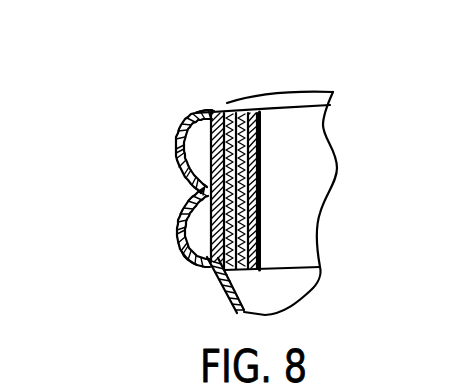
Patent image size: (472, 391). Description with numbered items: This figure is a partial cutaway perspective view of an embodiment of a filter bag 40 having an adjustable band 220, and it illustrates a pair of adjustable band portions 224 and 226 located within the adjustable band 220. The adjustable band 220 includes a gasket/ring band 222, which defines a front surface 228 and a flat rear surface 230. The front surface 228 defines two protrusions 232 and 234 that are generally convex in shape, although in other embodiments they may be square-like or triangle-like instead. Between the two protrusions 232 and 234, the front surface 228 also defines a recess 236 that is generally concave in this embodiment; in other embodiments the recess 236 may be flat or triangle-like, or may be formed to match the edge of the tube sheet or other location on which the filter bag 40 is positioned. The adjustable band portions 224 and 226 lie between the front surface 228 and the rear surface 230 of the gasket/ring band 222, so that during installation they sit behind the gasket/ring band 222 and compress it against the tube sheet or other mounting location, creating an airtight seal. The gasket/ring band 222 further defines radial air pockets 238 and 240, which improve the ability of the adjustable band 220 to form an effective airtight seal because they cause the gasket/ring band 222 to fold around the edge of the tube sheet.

The adjustable band 220 is at (142, 193).
The gasket/ring band 222 is at (155, 286).
The adjustable band portion 224 is at (227, 112).
The adjustable band portion 226 is at (259, 130).
The front surface 228 is at (165, 151).
The flat rear surface 230 is at (317, 168).
The protrusion 232 is at (190, 121).
The protrusion 234 is at (174, 252).
The recess 236 is at (185, 190).
The radial air pocket 238 is at (205, 258).
The radial air pocket 240 is at (200, 130).
The filter bag 40 is at (287, 287).